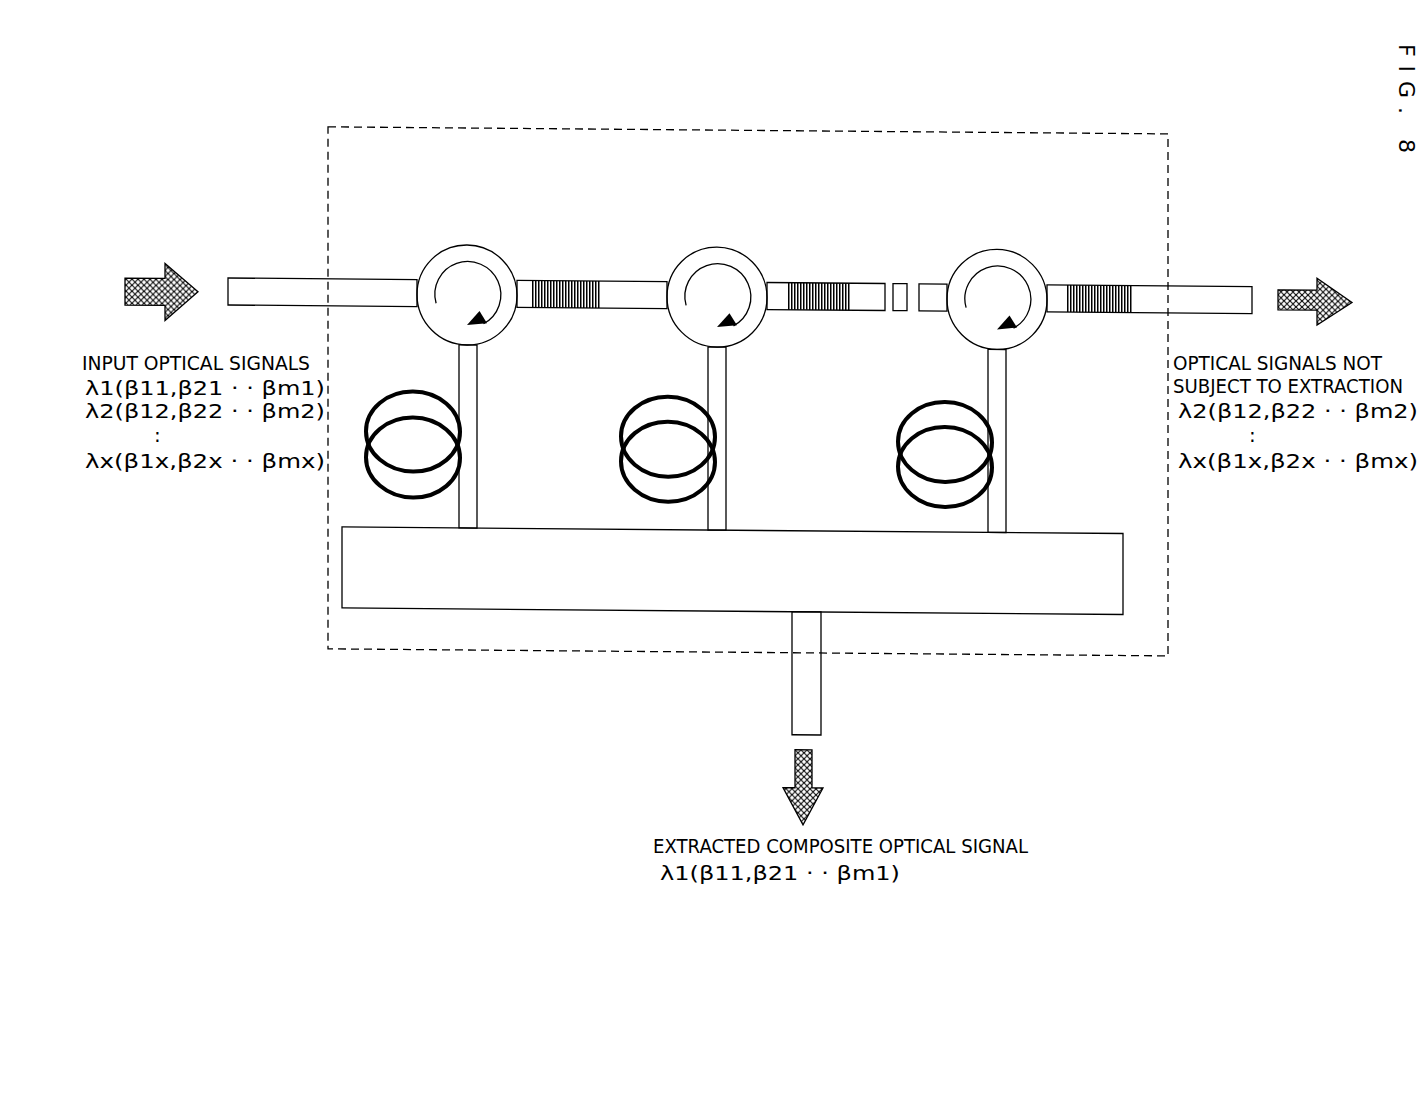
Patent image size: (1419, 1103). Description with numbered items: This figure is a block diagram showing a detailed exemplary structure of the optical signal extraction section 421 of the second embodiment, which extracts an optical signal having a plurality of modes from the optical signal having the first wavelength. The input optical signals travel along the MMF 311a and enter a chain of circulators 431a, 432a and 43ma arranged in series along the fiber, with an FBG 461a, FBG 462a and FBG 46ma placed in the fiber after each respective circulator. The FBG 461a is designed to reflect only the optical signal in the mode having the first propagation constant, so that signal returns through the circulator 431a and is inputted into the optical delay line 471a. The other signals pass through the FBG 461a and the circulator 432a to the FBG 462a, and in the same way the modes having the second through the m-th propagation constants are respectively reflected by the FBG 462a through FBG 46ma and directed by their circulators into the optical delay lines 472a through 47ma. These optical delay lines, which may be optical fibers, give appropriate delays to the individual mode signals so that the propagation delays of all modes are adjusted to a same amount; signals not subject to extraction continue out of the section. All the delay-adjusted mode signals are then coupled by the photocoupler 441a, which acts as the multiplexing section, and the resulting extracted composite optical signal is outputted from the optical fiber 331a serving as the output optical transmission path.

The MMF 311a is at (250, 278).
The optical signal extraction section 421 is at (1022, 133).
The circulator 431a is at (463, 245).
The circulator 432a is at (715, 246).
The circulator 43ma is at (975, 248).
The FBG 461a is at (572, 282).
The FBG 462a is at (822, 285).
The FBG 46ma is at (1078, 288).
The optical delay line 471a is at (413, 393).
The optical delay line 472a is at (642, 408).
The optical delay line 47ma is at (918, 410).
The photocoupler 441a is at (1078, 533).
The optical fiber 331a is at (822, 705).